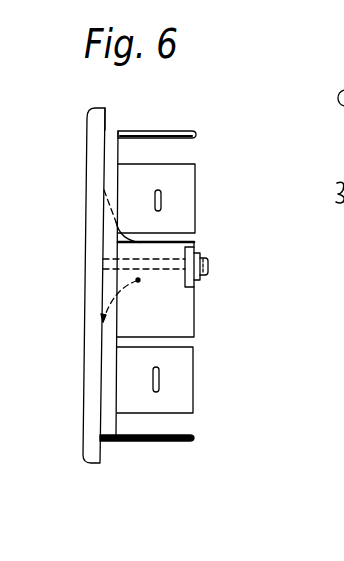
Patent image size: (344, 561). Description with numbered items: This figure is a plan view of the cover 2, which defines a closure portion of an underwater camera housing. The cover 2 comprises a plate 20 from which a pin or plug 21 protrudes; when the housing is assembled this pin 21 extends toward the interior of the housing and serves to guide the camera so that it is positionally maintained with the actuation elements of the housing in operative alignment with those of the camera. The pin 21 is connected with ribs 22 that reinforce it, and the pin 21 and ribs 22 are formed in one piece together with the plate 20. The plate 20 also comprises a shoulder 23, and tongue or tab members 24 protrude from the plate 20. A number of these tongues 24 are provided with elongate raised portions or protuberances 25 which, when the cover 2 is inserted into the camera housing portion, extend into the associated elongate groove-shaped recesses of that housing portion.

The cover 2 is at (77, 220).
The plate 20 is at (95, 142).
The pin 21 is at (208, 265).
The ribs 22 is at (185, 284).
The shoulder 23 is at (108, 119).
The tongue members 24 is at (174, 131).
The elongate raised portions 25 is at (164, 200).